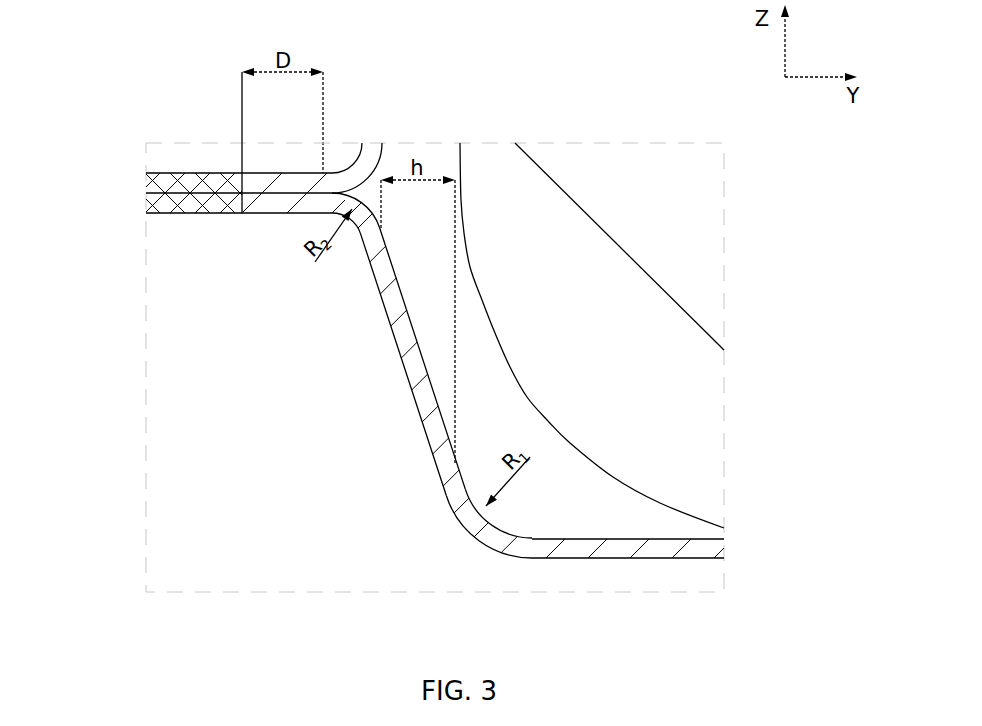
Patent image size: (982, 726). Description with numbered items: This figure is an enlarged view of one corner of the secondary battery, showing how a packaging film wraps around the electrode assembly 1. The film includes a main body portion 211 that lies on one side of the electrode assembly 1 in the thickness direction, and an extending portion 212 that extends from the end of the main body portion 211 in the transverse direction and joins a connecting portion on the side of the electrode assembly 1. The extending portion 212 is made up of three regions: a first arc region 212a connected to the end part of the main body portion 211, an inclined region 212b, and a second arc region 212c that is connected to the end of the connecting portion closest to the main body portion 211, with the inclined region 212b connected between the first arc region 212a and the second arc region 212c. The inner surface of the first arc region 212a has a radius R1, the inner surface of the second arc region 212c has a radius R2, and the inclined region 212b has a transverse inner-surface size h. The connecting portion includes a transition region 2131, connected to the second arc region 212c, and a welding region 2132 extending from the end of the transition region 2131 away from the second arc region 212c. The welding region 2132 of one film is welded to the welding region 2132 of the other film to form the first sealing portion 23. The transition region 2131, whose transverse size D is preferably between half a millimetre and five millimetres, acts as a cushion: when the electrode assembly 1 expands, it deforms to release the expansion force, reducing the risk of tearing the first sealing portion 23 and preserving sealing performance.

The electrode assembly 1 is at (707, 406).
The first sealing portion 23 is at (130, 195).
The main body portion 211 is at (658, 550).
The extending portion 212 is at (312, 468).
The first arc region 212a is at (498, 540).
The inclined region 212b is at (408, 367).
The second arc region 212c is at (366, 147).
The transition region 2131 is at (295, 183).
The welding region 2132 is at (185, 173).